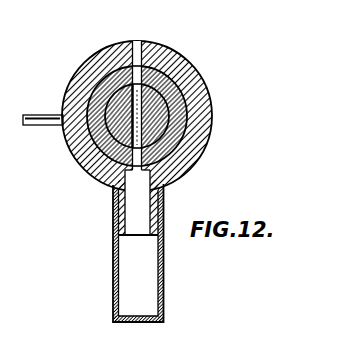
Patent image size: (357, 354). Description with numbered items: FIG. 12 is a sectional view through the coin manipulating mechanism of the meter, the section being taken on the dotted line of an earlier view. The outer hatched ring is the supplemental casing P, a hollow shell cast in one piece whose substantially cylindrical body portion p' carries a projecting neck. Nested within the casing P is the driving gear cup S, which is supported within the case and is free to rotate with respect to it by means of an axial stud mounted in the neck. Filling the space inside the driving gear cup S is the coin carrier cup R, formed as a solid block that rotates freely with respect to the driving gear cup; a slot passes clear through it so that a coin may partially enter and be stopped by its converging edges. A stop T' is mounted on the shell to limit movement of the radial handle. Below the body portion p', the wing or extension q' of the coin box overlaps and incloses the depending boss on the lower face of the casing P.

The supplemental casing P is at (180, 57).
The driving gear cup S is at (98, 102).
The coin carrier cup R is at (155, 123).
The permanent stop T' is at (43, 131).
The body portion p' is at (137, 202).
The wing or extension q' is at (138, 253).